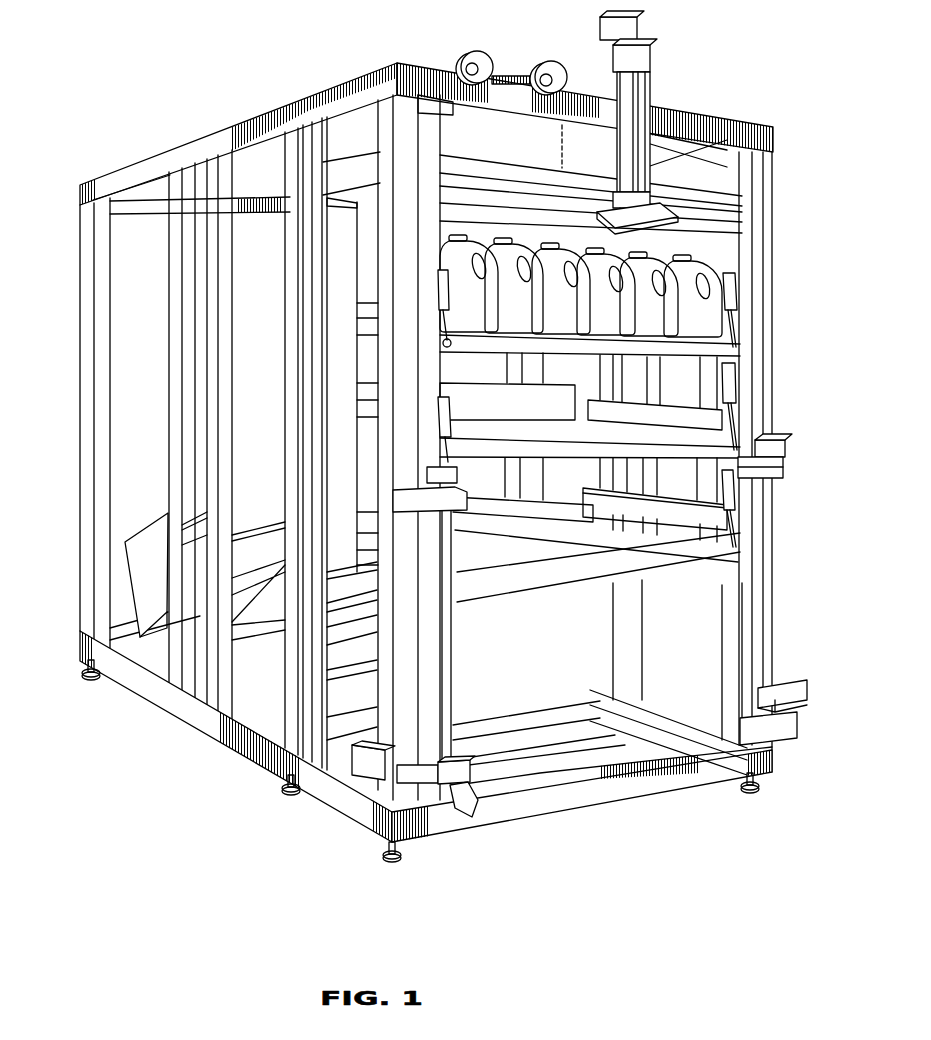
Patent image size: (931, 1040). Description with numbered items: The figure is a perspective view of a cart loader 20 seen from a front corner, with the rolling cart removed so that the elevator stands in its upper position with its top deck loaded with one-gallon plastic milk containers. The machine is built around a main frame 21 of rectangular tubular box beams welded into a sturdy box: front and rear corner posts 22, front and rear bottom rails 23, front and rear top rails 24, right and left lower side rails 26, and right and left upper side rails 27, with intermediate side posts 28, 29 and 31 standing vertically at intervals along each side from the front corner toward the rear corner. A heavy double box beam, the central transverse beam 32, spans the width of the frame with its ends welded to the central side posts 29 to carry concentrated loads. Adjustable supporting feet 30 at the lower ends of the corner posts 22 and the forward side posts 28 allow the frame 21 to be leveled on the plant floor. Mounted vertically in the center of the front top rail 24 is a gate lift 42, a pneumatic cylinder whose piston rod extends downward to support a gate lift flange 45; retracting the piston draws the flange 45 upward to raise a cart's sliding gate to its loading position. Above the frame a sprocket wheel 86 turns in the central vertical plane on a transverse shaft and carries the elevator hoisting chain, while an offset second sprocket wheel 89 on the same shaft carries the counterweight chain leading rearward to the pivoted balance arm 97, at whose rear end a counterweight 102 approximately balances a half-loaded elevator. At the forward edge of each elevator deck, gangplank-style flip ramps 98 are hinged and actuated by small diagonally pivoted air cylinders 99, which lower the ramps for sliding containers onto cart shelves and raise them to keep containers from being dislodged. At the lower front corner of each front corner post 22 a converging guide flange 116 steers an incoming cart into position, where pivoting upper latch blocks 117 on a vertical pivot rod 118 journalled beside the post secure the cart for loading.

The cart loader 20 is at (642, 810).
The main frame 21 is at (782, 623).
The corner post 22 is at (90, 244).
The bottom rail 23 is at (262, 627).
The top rail 24 is at (285, 204).
The lower side rail 26 is at (194, 711).
The upper side rail 27 is at (152, 174).
The forward side post 28 is at (290, 422).
The central side post 29 is at (224, 306).
The adjustable supporting foot 30 is at (84, 672).
The rearmost central side post 31 is at (174, 307).
The central transverse beam 32 is at (242, 527).
The gate lift 42 is at (652, 46).
The gate lift flange 45 is at (666, 211).
The sprocket wheel 86 is at (557, 67).
The second sprocket wheel 89 is at (484, 61).
The balance arm 97 is at (262, 588).
The flip ramp 98 is at (646, 339).
The air cylinder 99 is at (454, 429).
The counterweight 102 is at (144, 539).
The guide flange 116 is at (482, 814).
The upper latch block 117 is at (781, 448).
The pivot rod 118 is at (774, 567).